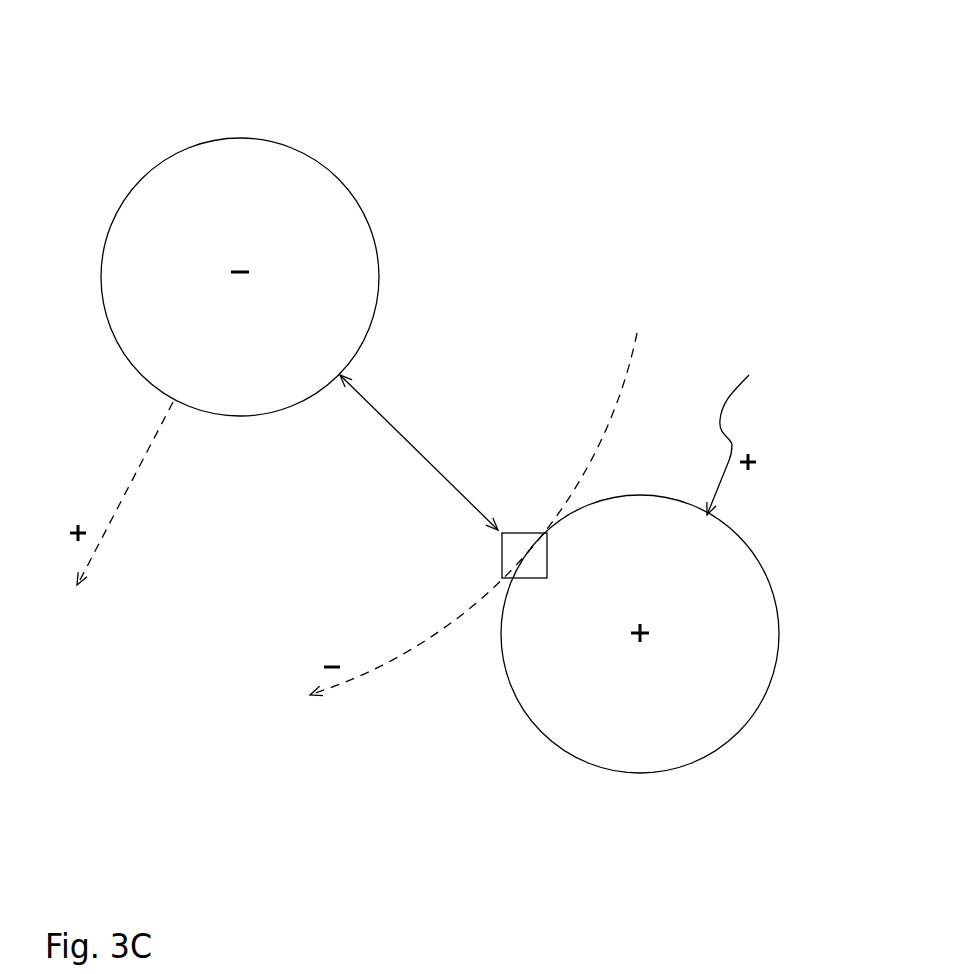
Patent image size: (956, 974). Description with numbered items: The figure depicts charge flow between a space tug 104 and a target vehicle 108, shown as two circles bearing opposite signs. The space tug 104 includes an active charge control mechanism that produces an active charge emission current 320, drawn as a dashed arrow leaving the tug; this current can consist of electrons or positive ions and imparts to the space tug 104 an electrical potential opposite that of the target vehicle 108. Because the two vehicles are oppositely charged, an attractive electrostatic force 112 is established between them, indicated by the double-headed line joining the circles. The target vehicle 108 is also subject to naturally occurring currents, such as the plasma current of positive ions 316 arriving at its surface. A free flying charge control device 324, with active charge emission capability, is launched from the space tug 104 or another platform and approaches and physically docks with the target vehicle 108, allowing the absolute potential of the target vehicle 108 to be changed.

The space tug 104 is at (243, 138).
The target vehicle 108 is at (690, 763).
The attractive electrostatic force 112 is at (413, 443).
The free flying charge control device 324 is at (500, 553).
The active charge emission current 320 is at (132, 478).
The plasma current of positive ions 316 is at (733, 443).